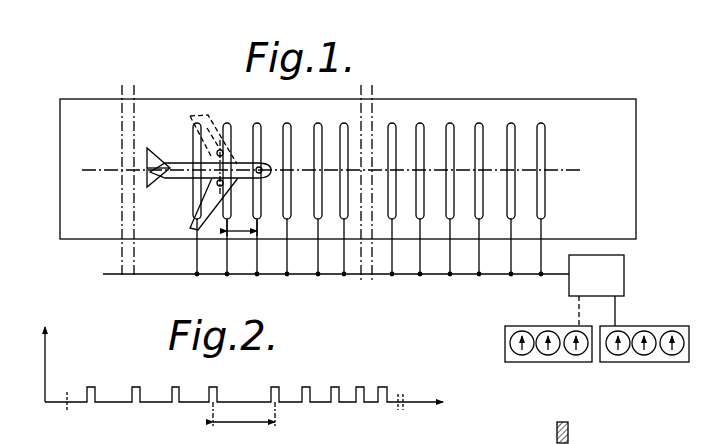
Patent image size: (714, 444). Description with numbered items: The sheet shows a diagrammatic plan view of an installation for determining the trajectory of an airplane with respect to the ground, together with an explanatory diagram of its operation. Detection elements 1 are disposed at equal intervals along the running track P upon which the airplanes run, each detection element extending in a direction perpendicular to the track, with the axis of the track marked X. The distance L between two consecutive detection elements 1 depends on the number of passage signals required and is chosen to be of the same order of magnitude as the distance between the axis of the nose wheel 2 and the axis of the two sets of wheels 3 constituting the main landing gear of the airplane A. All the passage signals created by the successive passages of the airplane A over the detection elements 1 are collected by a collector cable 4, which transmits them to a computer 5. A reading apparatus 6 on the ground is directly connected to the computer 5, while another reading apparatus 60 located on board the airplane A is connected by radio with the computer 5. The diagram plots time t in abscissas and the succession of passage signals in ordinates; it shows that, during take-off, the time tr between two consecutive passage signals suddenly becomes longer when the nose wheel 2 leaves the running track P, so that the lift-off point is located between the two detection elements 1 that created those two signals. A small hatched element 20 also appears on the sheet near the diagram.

In FIG. 1, the detection elements 1 is at (259, 125).
In FIG. 1, the nose wheel 2 is at (247, 170).
In FIG. 1, the sets of wheels 3 is at (196, 160).
In FIG. 1, the collector cable 4 is at (450, 275).
In FIG. 1, the computer 5 is at (596, 290).
In FIG. 1, the reading apparatus 6 is at (661, 326).
In FIG. 1, the reading apparatus 60 is at (548, 333).
In FIG. 1, the hatched element 20 is at (541, 433).
In FIG. 1, the running track P is at (630, 123).
In FIG. 1, the axis X is at (331, 170).
In FIG. 1, the airplane A is at (207, 127).
In FIG. 1, the distance between two consecutive detection elements L is at (242, 198).
In FIG. 2, the time t is at (252, 398).
In FIG. 2, the time between two consecutive passage signals tr is at (244, 414).